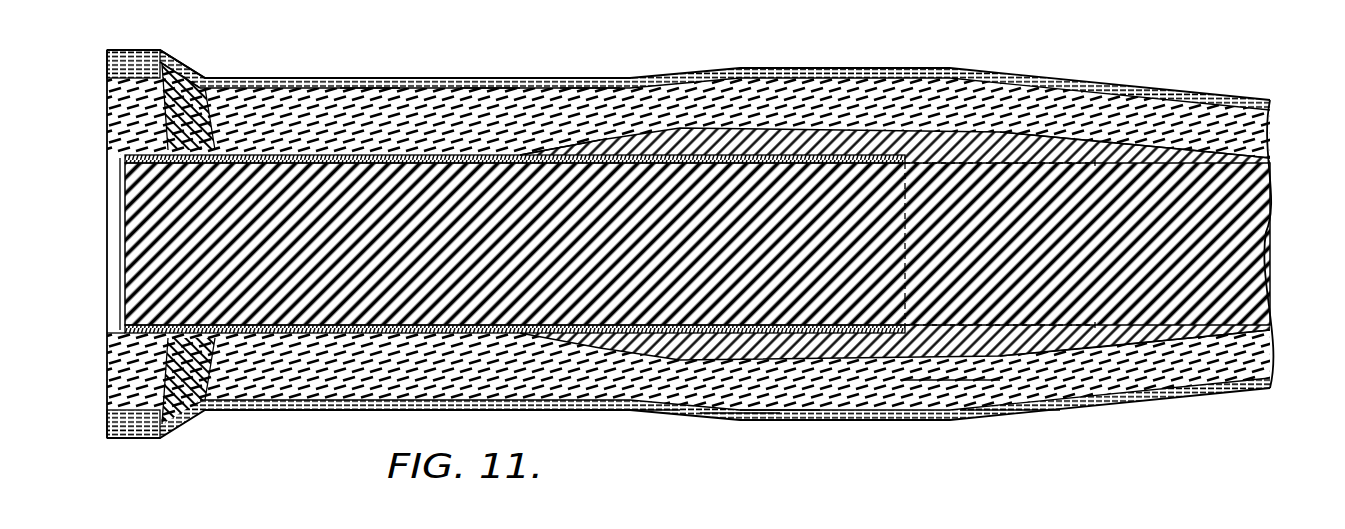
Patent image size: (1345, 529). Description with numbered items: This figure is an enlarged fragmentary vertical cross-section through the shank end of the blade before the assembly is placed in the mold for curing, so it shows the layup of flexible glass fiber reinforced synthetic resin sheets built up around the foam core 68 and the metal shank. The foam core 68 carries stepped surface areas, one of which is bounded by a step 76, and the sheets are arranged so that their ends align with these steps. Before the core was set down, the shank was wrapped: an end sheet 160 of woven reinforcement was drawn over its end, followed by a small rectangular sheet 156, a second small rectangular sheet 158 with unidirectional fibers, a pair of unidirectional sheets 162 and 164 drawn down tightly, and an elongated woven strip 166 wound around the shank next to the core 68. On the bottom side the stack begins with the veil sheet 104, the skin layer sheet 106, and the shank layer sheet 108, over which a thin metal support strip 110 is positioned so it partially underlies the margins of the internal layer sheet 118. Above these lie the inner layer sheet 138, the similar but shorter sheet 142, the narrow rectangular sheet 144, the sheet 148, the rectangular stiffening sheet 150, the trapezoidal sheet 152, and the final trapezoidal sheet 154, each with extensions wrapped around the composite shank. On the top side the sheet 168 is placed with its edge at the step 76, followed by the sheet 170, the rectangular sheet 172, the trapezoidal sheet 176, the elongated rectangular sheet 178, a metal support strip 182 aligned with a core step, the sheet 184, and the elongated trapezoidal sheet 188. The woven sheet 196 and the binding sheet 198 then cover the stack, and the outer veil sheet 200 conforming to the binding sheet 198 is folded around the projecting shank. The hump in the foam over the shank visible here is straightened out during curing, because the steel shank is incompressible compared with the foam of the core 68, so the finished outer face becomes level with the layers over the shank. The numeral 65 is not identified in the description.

The central conductor core 65 is at (643, 170).
The foam core 68 is at (1268, 231).
The step 76 is at (1190, 153).
The veil sheet 104 is at (168, 430).
The skin layer sheet 106 is at (245, 410).
The shank layer sheet 108 is at (347, 413).
The metal support strip 110 is at (518, 4).
The internal layer sheet 118 is at (630, 415).
The inner layer sheet 138 is at (745, 405).
The unidirectional reinforced sheet 142 is at (770, 417).
The narrow rectangular sheet 144 is at (873, 410).
The unidirectional reinforced sheet 148 is at (953, 390).
The stiffening sheet 150 is at (1002, 385).
The trapezoidal sheet 152 is at (1060, 363).
The final trapezoidal sheet 154 is at (1137, 347).
The small rectangular sheet 156 is at (113, 333).
The small rectangular sheet 158 is at (107, 342).
The end sheet 160 is at (120, 267).
The unidirectional reinforced sheet 162 is at (108, 147).
The unidirectional reinforced sheet 164 is at (107, 143).
The elongated strip 166 is at (107, 363).
The composition U sheet 168 is at (1075, 140).
The composition U sheet 170 is at (650, 123).
The rectangular sheet 172 is at (577, 103).
The trapezoidal sheet 176 is at (582, 127).
The elongated rectangular sheet 178 is at (485, 103).
The metal support strip 182 is at (437, 107).
The unidirectional reinforced sheet 184 is at (365, 80).
The elongated trapezoidal sheet 188 is at (342, 78).
The woven reinforced sheet 196 is at (232, 78).
The binding sheet 198 is at (187, 64).
The outer veil sheet 200 is at (155, 50).